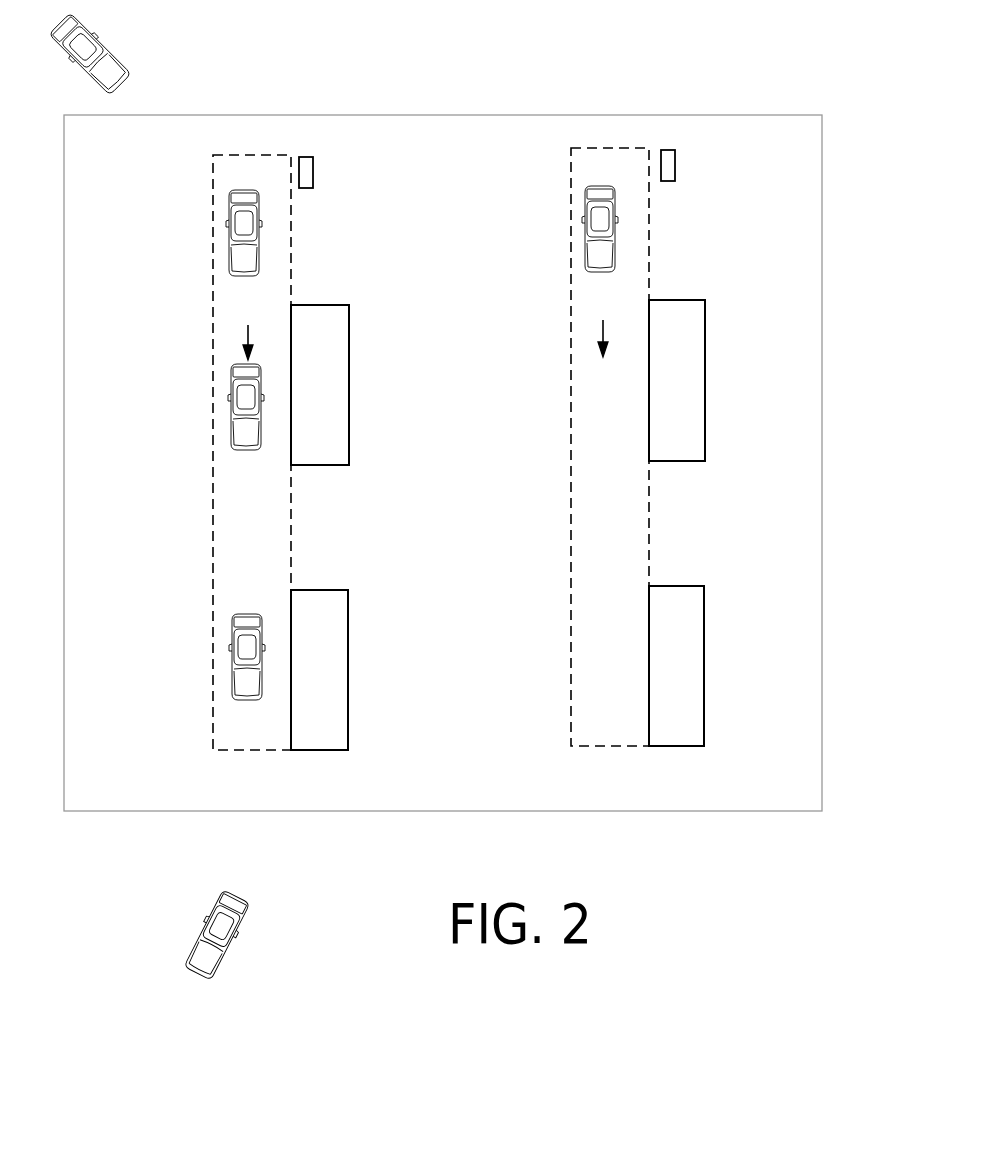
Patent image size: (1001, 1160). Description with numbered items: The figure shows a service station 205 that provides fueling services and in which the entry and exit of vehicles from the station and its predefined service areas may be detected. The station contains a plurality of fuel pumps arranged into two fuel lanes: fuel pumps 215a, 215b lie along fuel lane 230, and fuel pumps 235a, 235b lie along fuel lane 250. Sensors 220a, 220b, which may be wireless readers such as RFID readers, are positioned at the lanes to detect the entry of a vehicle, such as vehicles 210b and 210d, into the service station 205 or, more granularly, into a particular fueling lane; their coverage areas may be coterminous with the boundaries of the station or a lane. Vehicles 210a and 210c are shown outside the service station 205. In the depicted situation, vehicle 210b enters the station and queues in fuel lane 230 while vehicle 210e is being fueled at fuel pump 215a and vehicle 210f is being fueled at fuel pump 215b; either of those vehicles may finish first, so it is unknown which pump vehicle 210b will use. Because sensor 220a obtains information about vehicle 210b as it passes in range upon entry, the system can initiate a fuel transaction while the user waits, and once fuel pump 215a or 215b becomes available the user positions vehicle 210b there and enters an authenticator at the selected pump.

The service station 205 is at (466, 546).
The vehicle 210a is at (98, 42).
The vehicle 210b is at (260, 220).
The vehicle 210c is at (210, 923).
The vehicle 210d is at (615, 220).
The vehicle 210e is at (245, 449).
The vehicle 210f is at (253, 612).
The fuel pump 215a is at (350, 355).
The fuel pump 215b is at (350, 652).
The sensor 220a is at (313, 168).
The sensor 220b is at (677, 144).
The fuel lane 230 is at (212, 385).
The fuel pump 235a is at (660, 270).
The fuel pump 235b is at (685, 585).
The fuel lane 250 is at (567, 372).